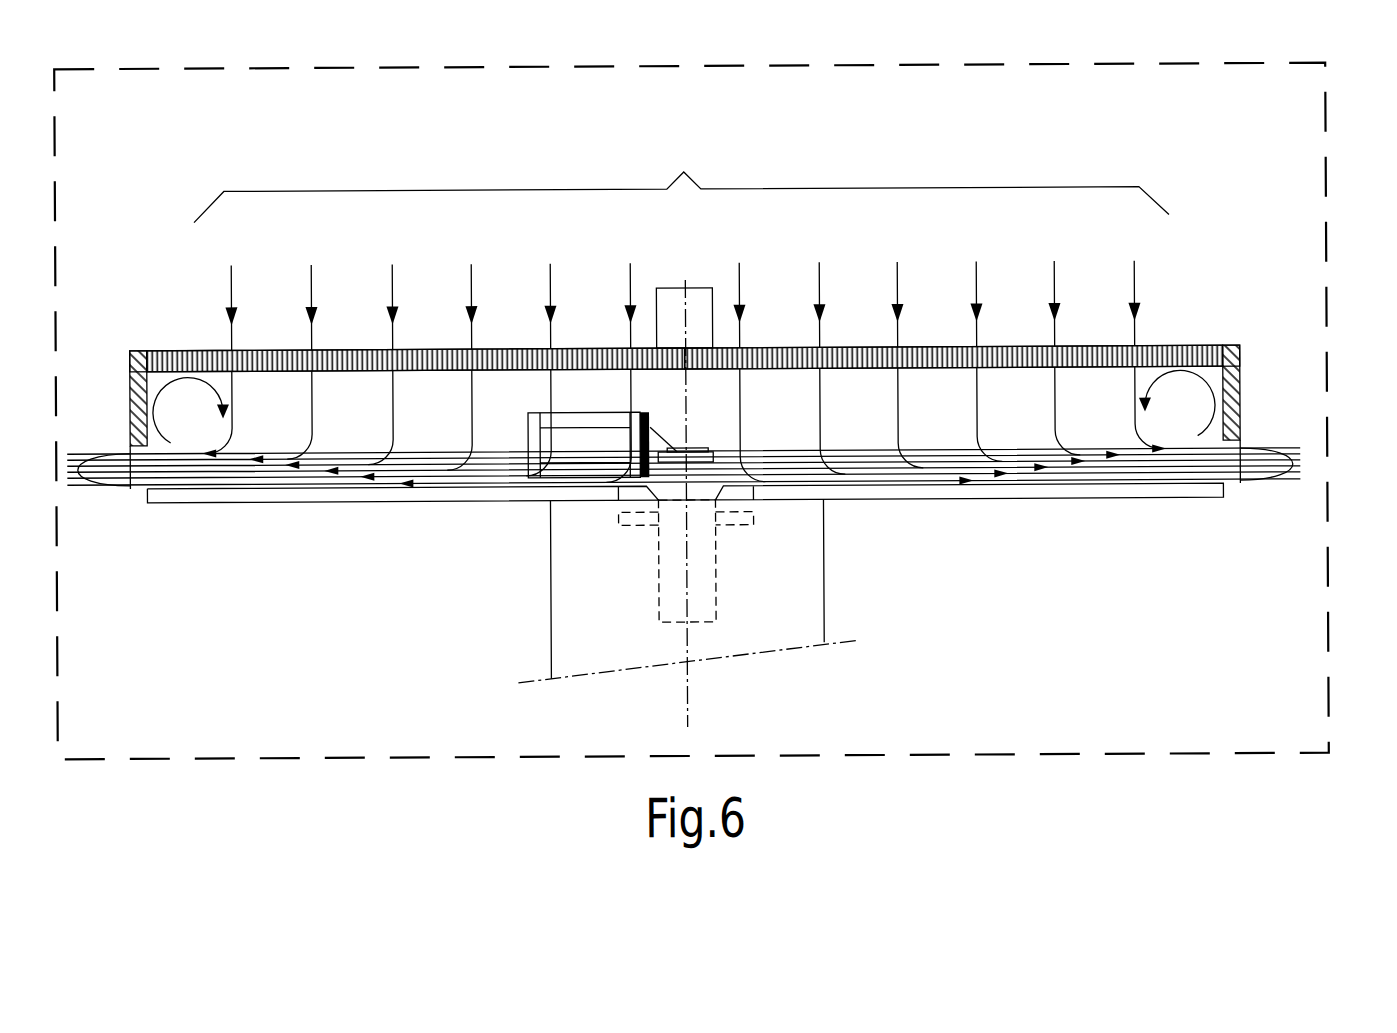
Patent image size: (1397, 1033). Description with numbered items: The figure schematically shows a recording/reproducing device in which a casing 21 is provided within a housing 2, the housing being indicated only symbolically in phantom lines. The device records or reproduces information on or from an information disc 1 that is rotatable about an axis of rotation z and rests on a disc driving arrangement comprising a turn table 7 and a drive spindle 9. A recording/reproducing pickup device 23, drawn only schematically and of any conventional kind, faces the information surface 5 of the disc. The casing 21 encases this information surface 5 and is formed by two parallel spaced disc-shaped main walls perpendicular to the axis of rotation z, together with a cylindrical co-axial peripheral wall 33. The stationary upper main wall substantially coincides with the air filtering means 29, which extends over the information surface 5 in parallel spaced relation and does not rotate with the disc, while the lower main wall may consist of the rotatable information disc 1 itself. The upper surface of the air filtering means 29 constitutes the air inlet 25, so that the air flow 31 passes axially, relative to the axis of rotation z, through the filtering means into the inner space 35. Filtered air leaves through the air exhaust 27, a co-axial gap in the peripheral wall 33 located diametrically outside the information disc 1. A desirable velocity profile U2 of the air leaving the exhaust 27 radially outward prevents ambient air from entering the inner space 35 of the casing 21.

The housing 2 is at (1327, 92).
The air flow 31 is at (682, 242).
The recording/reproducing pickup device 23 is at (538, 396).
The axis of rotation z is at (686, 280).
The air inlet 25 is at (933, 347).
The air filtering means 29 is at (1091, 347).
The casing 21 is at (1247, 336).
The peripheral wall 33 is at (1247, 362).
The velocity profile U2 is at (1247, 440).
The air exhaust 27 is at (1262, 485).
The information disc 1 is at (1073, 500).
The inner space 35 is at (352, 440).
The information surface 5 is at (766, 485).
The turn table 7 is at (808, 566).
The drive spindle 9 is at (668, 563).